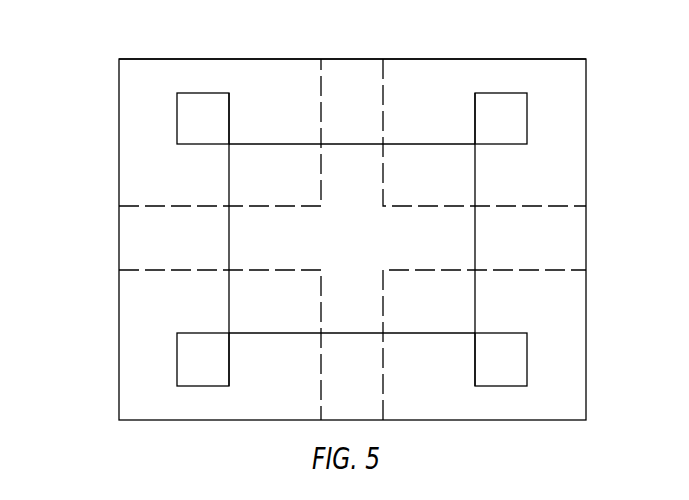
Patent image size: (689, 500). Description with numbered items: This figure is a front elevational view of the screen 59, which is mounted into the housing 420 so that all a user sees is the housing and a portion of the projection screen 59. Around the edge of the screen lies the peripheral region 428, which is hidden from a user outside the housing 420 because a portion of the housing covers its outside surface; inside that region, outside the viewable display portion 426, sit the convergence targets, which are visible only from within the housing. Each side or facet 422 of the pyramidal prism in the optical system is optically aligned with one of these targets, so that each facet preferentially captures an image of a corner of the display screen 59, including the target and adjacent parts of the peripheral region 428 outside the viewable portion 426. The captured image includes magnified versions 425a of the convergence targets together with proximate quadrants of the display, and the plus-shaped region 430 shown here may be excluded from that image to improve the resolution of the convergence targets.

The screen 59 is at (104, 150).
The housing 420 is at (392, 239).
The side 422 is at (447, 238).
The magnified versions of the convergence targets 425a is at (167, 78).
The viewable display portion 426 is at (447, 239).
The peripheral region 428 is at (352, 44).
The plus-shaped region 430 is at (352, 224).